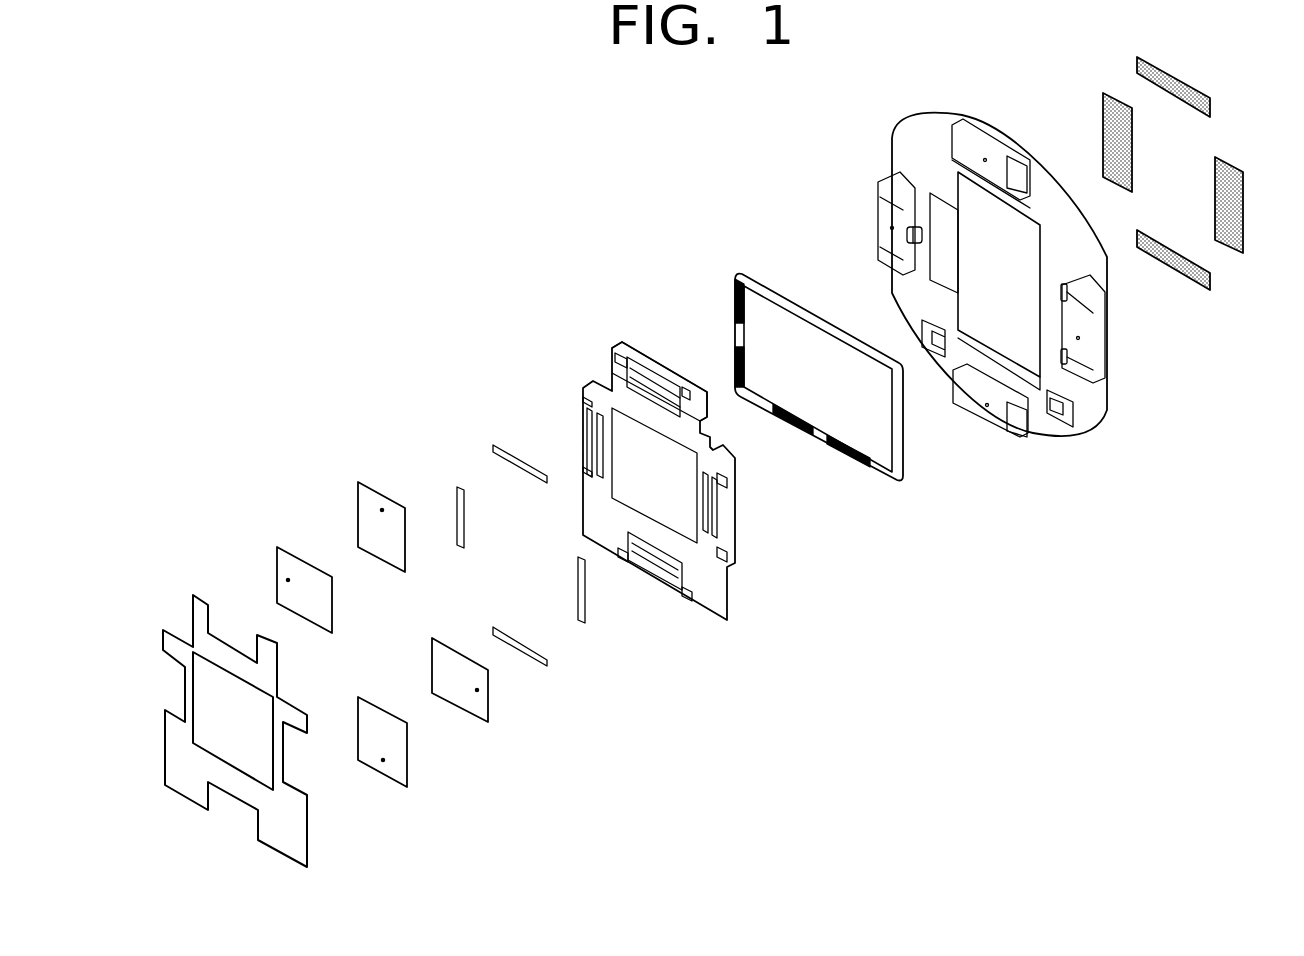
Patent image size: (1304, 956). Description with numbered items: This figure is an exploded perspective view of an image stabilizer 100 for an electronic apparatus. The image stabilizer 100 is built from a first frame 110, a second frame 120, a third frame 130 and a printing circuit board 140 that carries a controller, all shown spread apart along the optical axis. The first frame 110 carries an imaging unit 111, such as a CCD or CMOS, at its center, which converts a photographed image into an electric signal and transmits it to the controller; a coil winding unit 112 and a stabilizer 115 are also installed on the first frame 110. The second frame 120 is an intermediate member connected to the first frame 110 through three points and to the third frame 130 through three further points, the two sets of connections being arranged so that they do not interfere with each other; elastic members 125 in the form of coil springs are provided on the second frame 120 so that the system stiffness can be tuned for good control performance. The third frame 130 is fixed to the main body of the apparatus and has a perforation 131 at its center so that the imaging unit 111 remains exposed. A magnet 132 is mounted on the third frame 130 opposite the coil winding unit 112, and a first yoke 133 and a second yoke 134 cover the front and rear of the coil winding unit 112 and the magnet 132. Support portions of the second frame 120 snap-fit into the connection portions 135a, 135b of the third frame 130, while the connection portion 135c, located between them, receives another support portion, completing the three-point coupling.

The image stabilizer 100 is at (709, 147).
The first frame 110 is at (665, 481).
The imaging unit 111 is at (657, 510).
The coil winding unit 112 is at (648, 355).
The stabilizer 115 is at (588, 610).
The second frame 120 is at (790, 401).
The elastic members 125 is at (732, 300).
The third frame 130 is at (992, 269).
The perforation 131 is at (977, 247).
The magnet 132 is at (1030, 208).
The first yoke 133 is at (1215, 283).
The second yoke 134 is at (468, 715).
The fourth connection portion 135a is at (1068, 283).
The fifth connection portion 135b is at (1068, 358).
The fifth connection portion 135c is at (907, 215).
The printing circuit board 140 is at (302, 830).